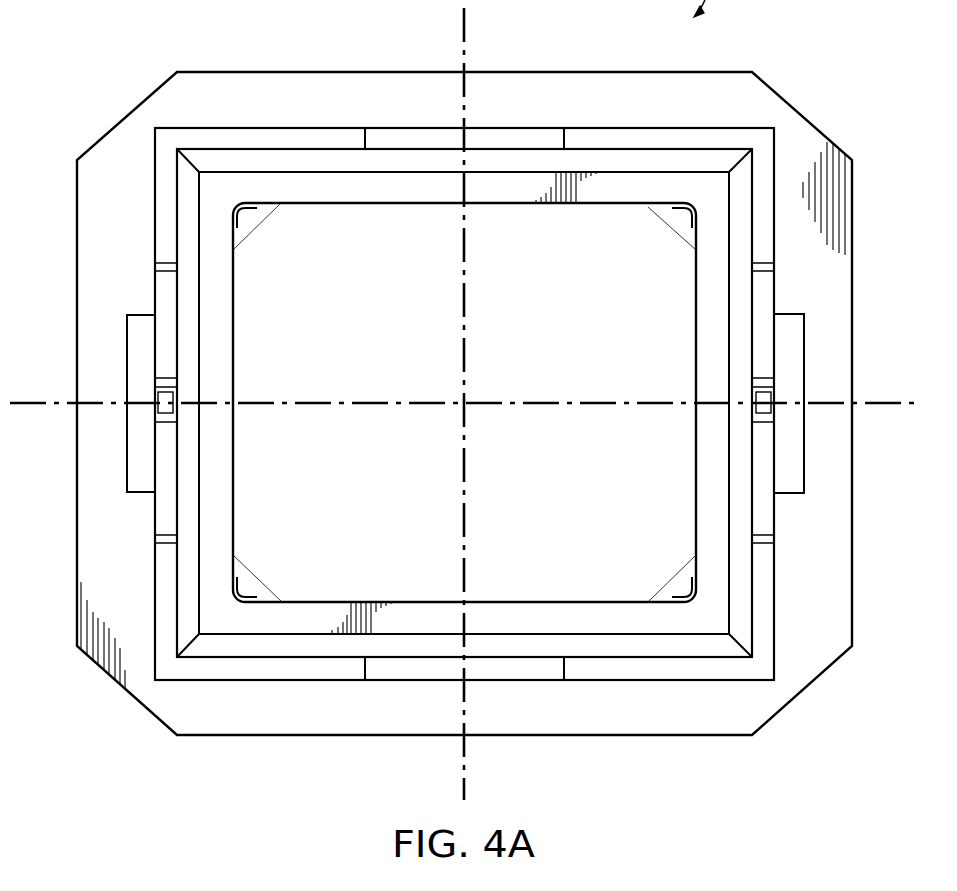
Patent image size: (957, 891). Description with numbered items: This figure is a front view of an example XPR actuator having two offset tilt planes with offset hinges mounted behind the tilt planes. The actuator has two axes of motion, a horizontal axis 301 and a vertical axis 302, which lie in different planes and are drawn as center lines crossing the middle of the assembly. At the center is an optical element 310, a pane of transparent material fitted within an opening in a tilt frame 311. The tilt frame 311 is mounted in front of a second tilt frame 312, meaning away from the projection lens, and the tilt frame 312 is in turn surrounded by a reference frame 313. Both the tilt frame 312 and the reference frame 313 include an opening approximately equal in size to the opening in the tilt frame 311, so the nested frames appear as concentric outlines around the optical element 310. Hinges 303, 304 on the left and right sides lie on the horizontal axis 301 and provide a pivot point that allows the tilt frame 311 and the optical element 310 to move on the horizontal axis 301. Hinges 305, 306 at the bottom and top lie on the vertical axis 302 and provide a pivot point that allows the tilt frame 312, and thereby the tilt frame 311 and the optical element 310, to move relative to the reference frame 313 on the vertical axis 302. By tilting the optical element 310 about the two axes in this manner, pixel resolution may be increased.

The horizontal axis 301 is at (45, 400).
The vertical axis 302 is at (467, 752).
The hinge 303 is at (160, 408).
The hinge 304 is at (768, 408).
The hinge 305 is at (416, 668).
The hinge 306 is at (478, 135).
The optical element 310 is at (370, 320).
The tilt frame 311 is at (413, 180).
The tilt frame 312 is at (233, 130).
The reference frame 313 is at (322, 72).